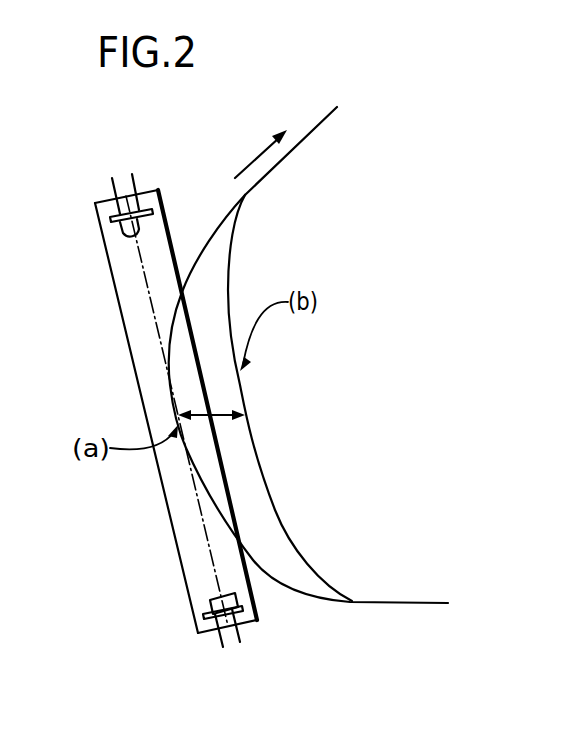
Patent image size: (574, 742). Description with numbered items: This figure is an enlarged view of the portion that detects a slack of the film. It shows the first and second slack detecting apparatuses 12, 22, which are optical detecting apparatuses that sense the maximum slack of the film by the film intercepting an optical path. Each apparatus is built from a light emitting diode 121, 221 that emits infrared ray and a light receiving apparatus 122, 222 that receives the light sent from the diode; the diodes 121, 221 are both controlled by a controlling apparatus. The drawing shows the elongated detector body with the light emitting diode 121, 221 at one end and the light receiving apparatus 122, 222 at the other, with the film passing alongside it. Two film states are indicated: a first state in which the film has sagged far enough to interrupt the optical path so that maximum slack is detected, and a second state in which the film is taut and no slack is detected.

The first slack detecting apparatus 12 is at (176, 411).
The second slack detecting apparatus 22 is at (178, 523).
The light emitting diode 121 is at (95, 252).
The light emitting diode 221 is at (130, 237).
The light receiving apparatus 122 is at (174, 648).
The light receiving apparatus 222 is at (195, 606).